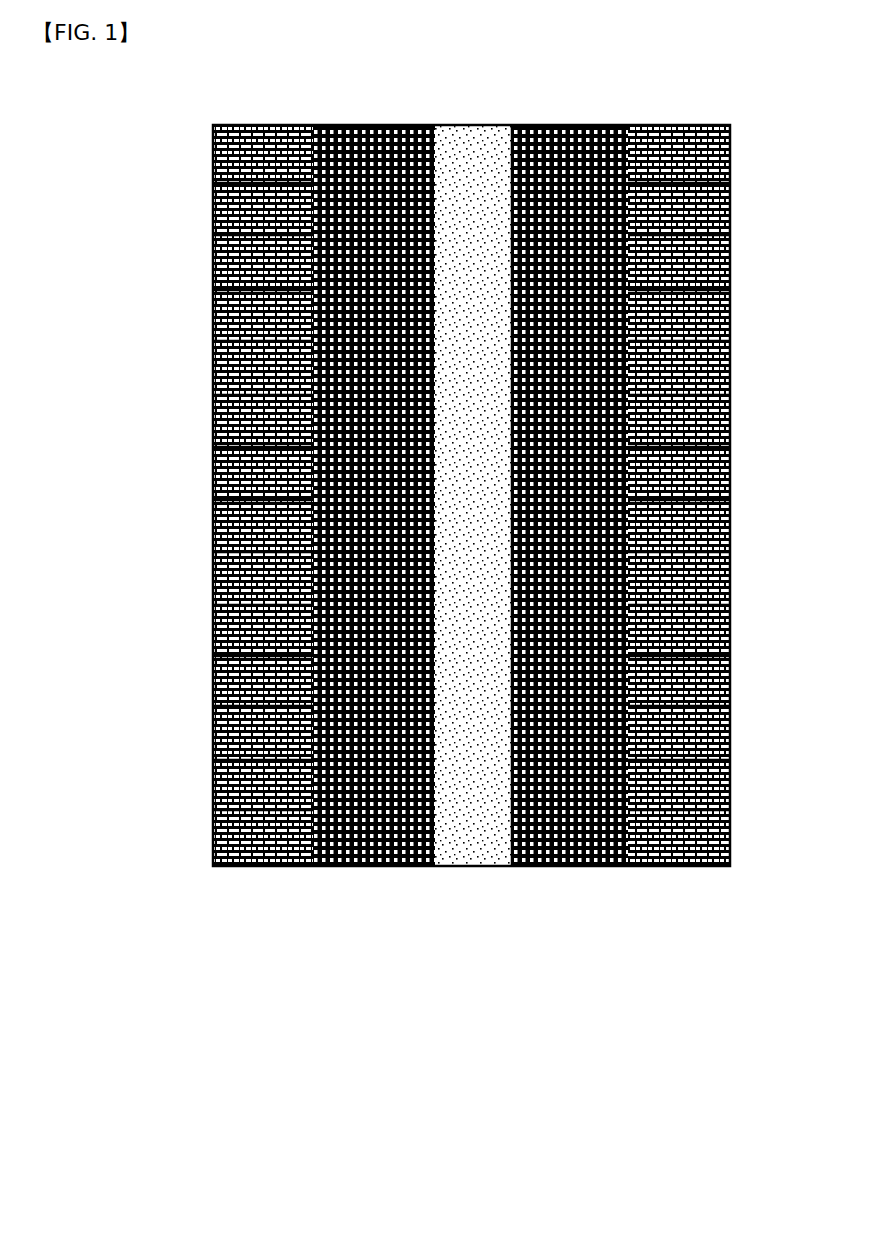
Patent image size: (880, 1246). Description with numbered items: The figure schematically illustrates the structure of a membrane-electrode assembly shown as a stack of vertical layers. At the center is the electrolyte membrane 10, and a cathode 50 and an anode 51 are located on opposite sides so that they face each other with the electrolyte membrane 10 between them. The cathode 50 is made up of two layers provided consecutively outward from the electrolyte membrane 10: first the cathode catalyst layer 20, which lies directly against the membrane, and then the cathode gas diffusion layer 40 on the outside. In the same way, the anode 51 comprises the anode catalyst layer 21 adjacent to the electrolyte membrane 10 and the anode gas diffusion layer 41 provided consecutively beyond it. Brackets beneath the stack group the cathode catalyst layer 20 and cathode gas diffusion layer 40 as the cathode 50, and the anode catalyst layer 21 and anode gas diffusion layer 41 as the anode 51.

The electrolyte membrane 10 is at (473, 866).
The cathode catalyst layer 20 is at (355, 866).
The anode catalyst layer 21 is at (577, 866).
The cathode gas diffusion layer 40 is at (257, 866).
The anode gas diffusion layer 41 is at (688, 866).
The cathode 50 is at (303, 634).
The anode 51 is at (646, 632).